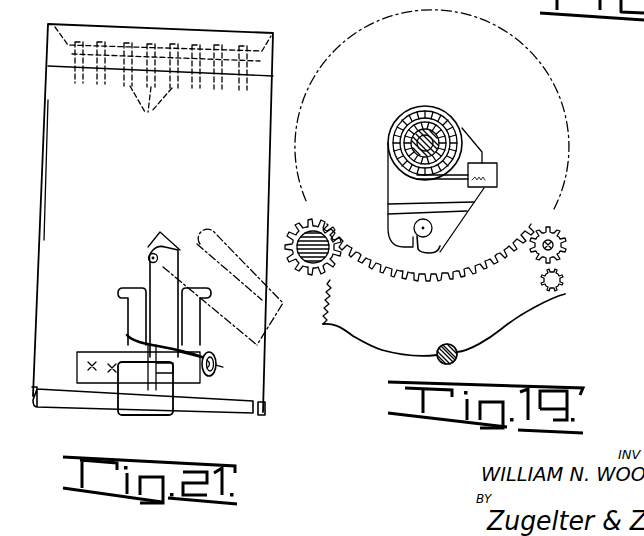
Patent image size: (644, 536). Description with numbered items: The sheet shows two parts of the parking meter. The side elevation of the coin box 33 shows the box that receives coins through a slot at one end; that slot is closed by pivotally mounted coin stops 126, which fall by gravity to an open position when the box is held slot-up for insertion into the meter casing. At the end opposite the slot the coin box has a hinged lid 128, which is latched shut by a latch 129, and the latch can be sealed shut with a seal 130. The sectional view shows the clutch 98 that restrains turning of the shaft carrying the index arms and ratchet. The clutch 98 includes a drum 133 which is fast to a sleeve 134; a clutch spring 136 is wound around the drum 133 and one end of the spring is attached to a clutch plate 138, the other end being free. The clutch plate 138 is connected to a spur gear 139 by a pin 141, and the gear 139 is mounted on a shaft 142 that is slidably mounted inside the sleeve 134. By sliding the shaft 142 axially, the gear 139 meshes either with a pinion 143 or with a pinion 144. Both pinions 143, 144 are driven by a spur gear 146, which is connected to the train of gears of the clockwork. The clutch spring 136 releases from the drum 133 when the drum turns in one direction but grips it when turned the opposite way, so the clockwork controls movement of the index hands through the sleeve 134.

In FIG. 21, the coin stops 126 is at (153, 112).
In FIG. 21, the coin box 33 is at (50, 177).
In FIG. 21, the latch 129 is at (193, 332).
In FIG. 21, the seal 130 is at (230, 370).
In FIG. 21, the hinged lid 128 is at (237, 410).
In FIG. 19, the spur gear 139 is at (556, 212).
In FIG. 19, the pinion 144 is at (320, 244).
In FIG. 19, the pinion 143 is at (566, 243).
In FIG. 19, the spur gear 146 is at (560, 283).
In FIG. 19, the pin 141 is at (432, 251).
In FIG. 19, the clutch plate 138 is at (474, 200).
In FIG. 19, the clutch spring 136 is at (463, 158).
In FIG. 19, the clutch 98 is at (410, 107).
In FIG. 19, the drum 133 is at (428, 125).
In FIG. 19, the sleeve 134 is at (412, 148).
In FIG. 19, the shaft 142 is at (406, 163).